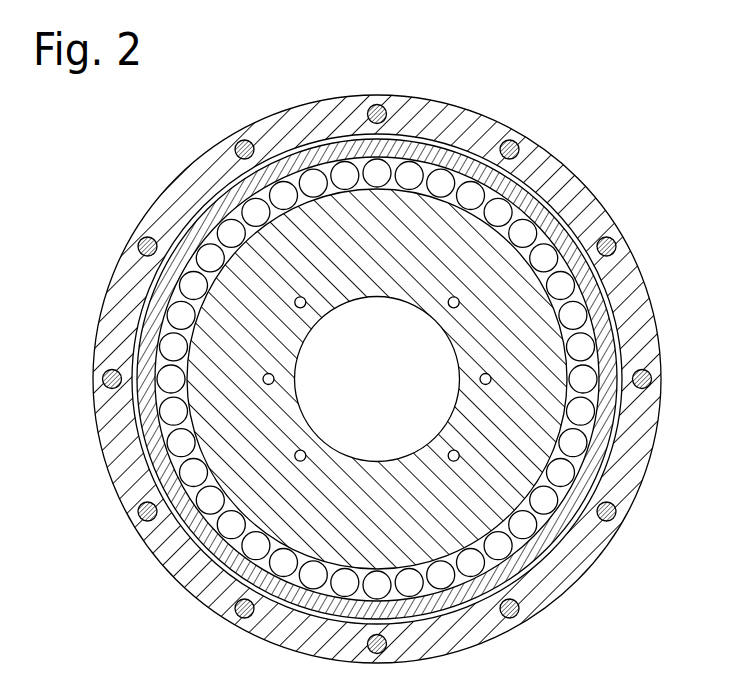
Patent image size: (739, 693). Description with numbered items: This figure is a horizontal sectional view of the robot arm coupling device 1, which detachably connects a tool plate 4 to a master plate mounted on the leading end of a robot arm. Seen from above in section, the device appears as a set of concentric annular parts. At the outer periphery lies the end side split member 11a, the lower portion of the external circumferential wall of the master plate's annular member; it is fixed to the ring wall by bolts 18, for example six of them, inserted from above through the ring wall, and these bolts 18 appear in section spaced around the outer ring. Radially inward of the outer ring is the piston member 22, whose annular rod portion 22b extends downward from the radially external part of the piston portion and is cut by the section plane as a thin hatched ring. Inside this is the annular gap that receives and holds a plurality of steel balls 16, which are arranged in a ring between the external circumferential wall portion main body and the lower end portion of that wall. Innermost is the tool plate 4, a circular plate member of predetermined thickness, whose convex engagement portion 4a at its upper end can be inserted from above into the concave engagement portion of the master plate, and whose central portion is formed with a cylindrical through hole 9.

The robot arm coupling device 1 is at (605, 155).
The end side split member 11a is at (598, 207).
The piston member 22 is at (419, 379).
The annular rod portion 22b is at (590, 289).
The tool plate 4 is at (377, 379).
The convex engagement portion 4a is at (477, 333).
The cylindrical through hole 9 is at (357, 390).
The steel balls 16 is at (475, 567).
The bolts 18 is at (647, 370).